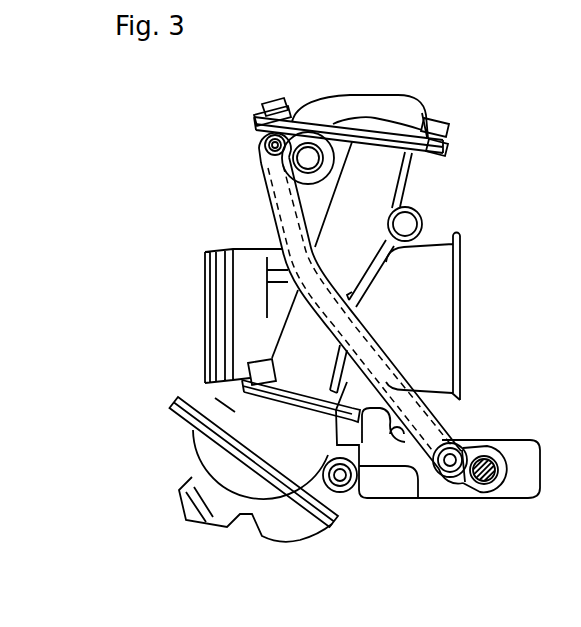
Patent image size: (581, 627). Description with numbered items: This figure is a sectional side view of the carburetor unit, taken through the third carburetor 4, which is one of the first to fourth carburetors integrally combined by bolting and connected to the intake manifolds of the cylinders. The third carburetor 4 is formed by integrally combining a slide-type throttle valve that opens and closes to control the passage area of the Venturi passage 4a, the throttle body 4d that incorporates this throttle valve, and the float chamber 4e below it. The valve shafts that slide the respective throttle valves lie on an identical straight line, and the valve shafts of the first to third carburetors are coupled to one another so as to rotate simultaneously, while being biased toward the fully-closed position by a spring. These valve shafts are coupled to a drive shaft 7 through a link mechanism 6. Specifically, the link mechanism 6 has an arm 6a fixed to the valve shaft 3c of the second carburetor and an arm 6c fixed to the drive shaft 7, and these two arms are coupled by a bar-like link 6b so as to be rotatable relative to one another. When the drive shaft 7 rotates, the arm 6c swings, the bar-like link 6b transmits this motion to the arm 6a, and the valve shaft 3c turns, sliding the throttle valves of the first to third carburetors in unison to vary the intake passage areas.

The third carburetor 4 is at (410, 100).
The Venturi passage 4a is at (432, 356).
The throttle body 4d is at (463, 278).
The float chamber 4e is at (302, 541).
The valve shaft 3c is at (296, 160).
The link mechanism 6 is at (272, 230).
The arm 6a is at (293, 124).
The bar-like link 6b is at (272, 182).
The arm 6c is at (450, 478).
The drive shaft 7 is at (490, 478).